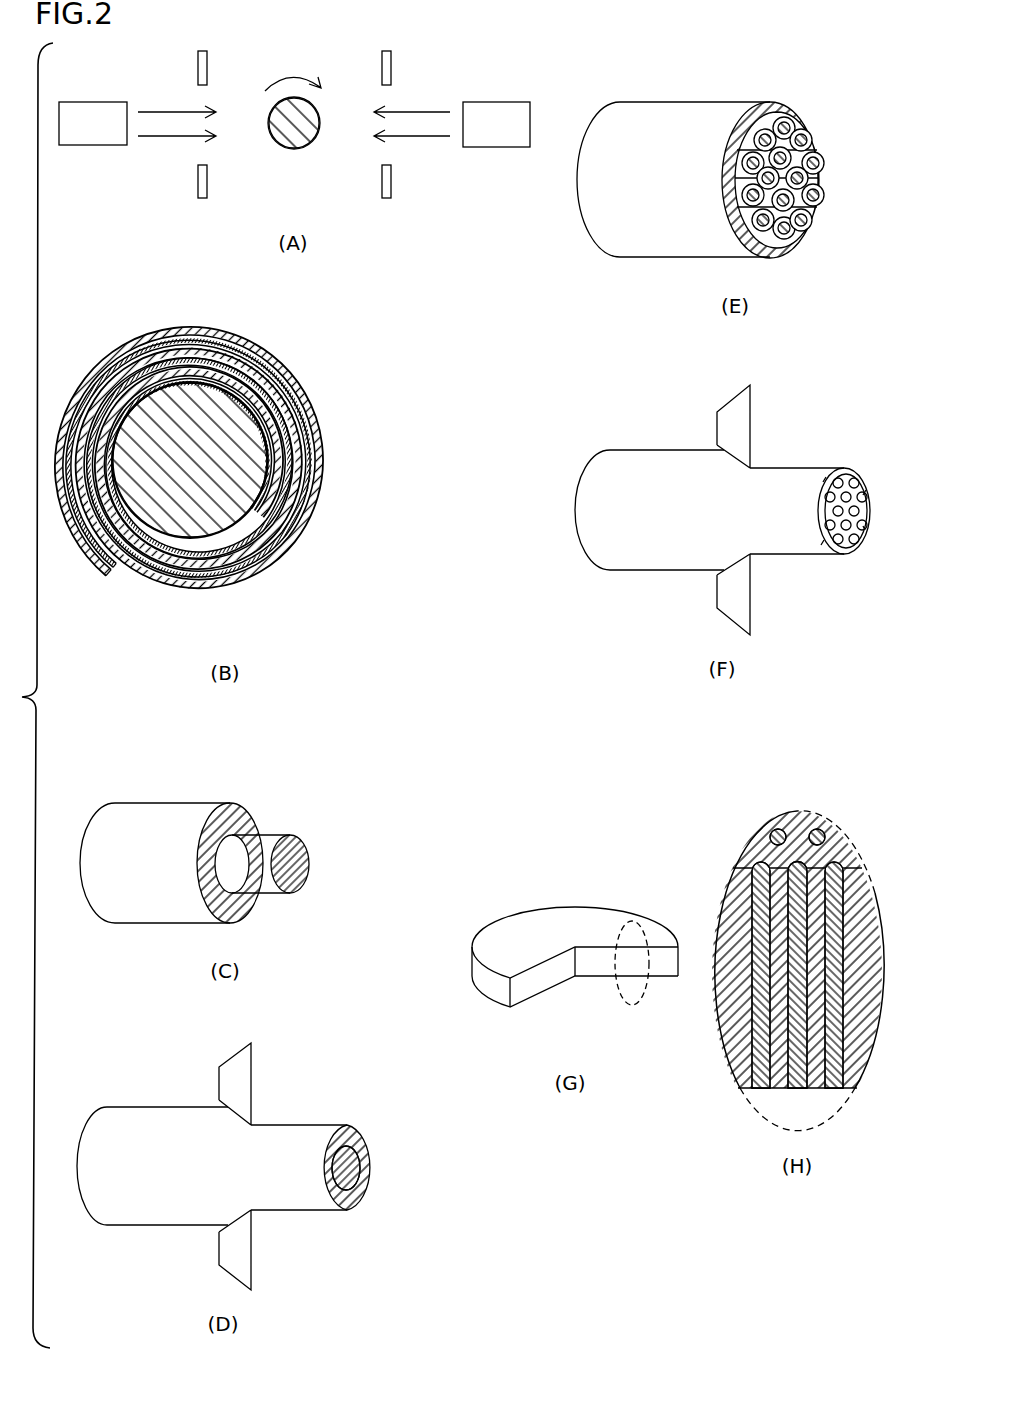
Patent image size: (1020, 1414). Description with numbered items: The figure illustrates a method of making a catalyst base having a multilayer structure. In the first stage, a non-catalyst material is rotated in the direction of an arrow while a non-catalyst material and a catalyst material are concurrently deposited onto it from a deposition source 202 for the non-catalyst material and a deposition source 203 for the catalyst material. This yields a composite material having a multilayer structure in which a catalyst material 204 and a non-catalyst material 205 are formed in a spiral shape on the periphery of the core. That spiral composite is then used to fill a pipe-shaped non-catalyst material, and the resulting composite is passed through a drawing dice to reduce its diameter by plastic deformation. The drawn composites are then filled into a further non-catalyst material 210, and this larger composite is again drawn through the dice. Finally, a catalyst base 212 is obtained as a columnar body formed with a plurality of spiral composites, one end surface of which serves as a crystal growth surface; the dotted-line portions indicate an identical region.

The deposition source 202 is at (83, 148).
The deposition source 203 is at (508, 150).
The catalyst material 204 is at (118, 553).
The non-catalyst material 205 is at (95, 545).
The non-catalyst material 210 is at (645, 112).
The catalyst base 212 is at (520, 925).